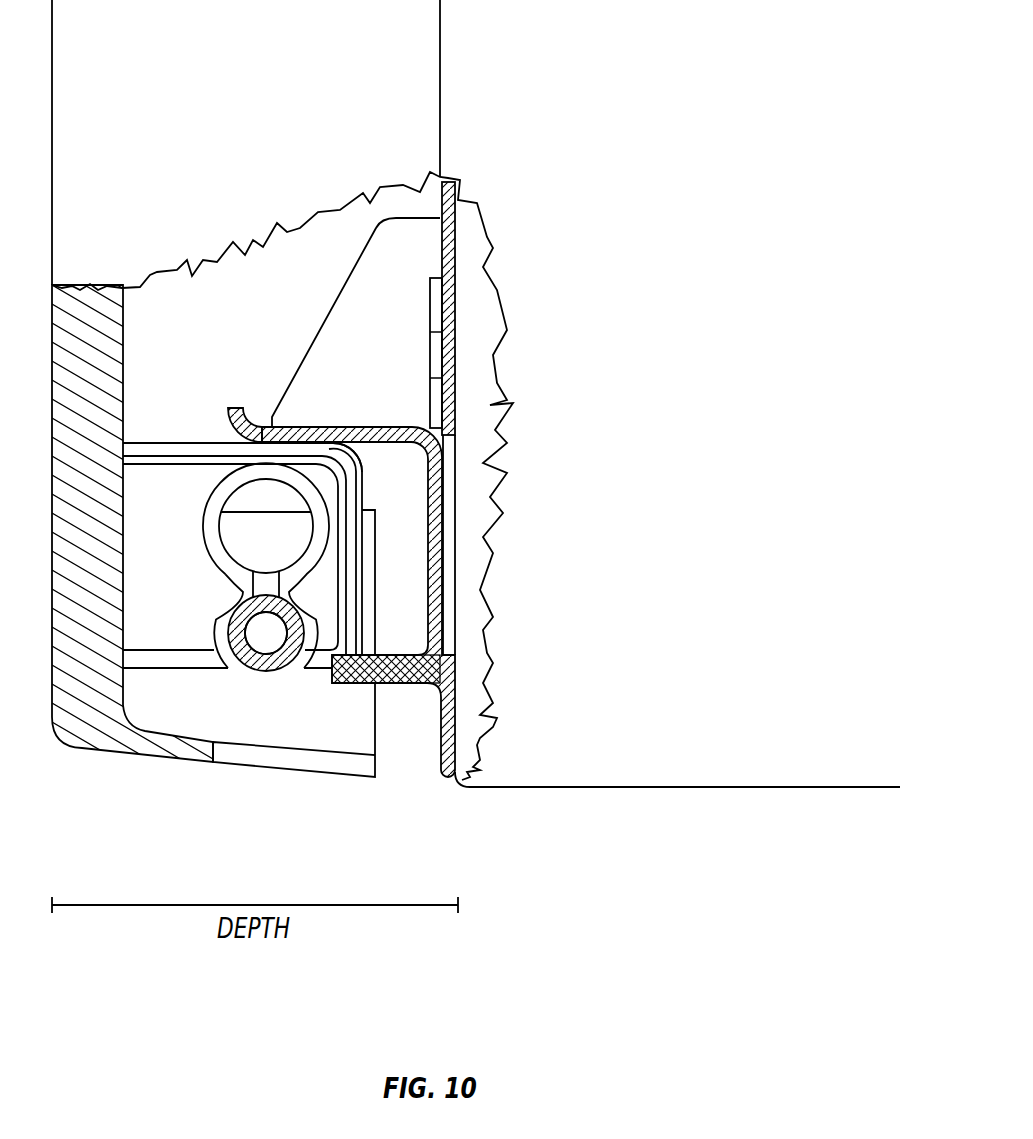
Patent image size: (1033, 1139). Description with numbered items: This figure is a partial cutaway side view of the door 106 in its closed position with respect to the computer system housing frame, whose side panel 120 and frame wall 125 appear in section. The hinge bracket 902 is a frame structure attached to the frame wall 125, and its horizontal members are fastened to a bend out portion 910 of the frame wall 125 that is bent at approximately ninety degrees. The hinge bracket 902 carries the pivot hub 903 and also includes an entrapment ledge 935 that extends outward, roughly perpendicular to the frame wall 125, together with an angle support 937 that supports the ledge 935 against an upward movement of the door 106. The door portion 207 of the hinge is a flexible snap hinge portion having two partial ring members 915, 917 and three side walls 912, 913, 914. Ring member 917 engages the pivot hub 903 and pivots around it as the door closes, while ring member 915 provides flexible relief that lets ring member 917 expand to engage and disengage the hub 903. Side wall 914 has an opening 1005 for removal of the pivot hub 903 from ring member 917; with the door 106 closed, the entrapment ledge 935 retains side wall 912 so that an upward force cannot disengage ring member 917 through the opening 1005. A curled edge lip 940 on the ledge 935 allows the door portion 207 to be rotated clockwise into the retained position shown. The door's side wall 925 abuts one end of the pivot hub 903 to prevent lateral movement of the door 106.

The door 106 is at (315, 75).
The side panel 120 is at (653, 89).
The hinge bracket 902 is at (285, 277).
The frame wall 125 is at (456, 228).
The door portion of the hinge 207 is at (142, 412).
The side wall 912 is at (170, 441).
The curled edge lip 940 is at (234, 404).
The angle support 937 is at (397, 359).
The entrapment ledge 935 is at (372, 447).
The side wall 913 is at (364, 509).
The ring member 915 is at (206, 556).
The ring member 917 is at (213, 616).
The bend out portion 910 is at (397, 653).
The side wall 914 is at (203, 674).
The opening 1005 is at (292, 675).
The pivot hub 903 is at (278, 642).
The side wall 925 is at (368, 741).